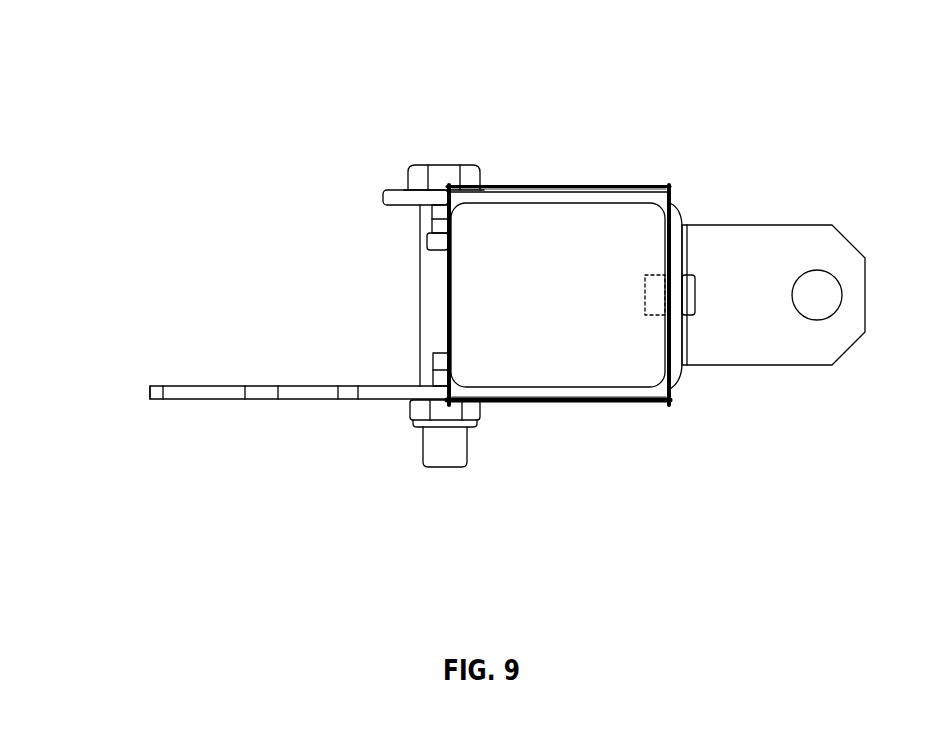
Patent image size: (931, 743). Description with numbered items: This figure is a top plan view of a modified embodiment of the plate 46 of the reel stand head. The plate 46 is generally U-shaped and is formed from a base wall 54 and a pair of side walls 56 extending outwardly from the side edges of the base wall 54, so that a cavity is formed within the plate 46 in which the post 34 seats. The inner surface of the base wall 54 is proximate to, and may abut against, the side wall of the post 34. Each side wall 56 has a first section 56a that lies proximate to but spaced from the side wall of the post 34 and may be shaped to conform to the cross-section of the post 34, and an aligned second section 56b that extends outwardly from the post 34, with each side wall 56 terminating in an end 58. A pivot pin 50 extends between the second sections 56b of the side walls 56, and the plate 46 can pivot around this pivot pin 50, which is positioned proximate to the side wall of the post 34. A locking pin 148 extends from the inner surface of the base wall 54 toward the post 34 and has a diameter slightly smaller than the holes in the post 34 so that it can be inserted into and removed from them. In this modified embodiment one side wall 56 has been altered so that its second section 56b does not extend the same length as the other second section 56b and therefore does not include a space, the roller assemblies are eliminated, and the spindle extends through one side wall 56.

The post 34 is at (578, 250).
The plate 46 is at (355, 408).
The pivot pin 50 is at (450, 452).
The base wall 54 is at (676, 223).
The side wall 56 is at (497, 184).
The first section 56a is at (535, 193).
The second section 56b is at (398, 187).
The end 58 is at (150, 393).
The locking pin 148 is at (696, 295).